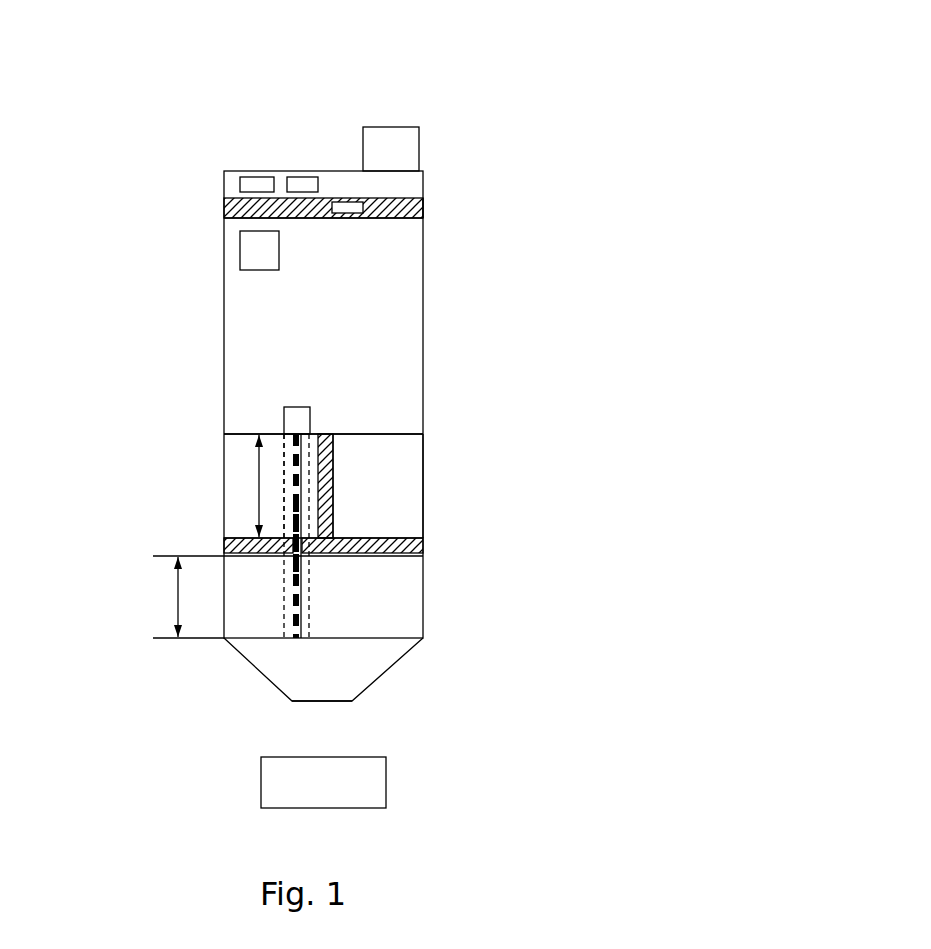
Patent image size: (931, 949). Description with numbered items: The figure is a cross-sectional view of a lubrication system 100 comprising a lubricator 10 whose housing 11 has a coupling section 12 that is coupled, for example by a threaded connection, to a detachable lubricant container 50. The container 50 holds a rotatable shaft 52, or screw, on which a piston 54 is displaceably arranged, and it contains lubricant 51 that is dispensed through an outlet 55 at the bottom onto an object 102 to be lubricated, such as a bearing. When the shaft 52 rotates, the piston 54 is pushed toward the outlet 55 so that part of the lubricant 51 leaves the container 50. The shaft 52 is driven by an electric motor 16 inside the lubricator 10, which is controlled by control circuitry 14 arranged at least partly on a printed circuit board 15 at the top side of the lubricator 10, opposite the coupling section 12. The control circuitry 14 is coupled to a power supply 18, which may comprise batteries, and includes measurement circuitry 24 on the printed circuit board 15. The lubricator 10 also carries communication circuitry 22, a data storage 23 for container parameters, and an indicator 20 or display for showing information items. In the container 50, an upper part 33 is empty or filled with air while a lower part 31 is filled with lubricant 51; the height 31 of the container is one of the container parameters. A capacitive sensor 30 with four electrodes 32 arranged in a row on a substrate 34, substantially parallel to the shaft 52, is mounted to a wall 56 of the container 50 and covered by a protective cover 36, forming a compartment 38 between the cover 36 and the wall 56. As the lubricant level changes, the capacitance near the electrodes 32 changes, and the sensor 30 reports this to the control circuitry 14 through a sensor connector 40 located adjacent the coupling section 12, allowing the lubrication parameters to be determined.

The lubrication system 100 is at (495, 72).
The lubricator 10 is at (168, 120).
The housing 11 is at (423, 338).
The coupling section 12 is at (222, 418).
The control circuitry 14 is at (224, 207).
The printed circuit board 15 is at (423, 205).
The electric motor 16 is at (395, 285).
The power supply 18 is at (240, 248).
The indicator 20 is at (383, 127).
The communication circuitry 22 is at (268, 170).
The data storage 23 is at (313, 170).
The measurement circuitry 24 is at (347, 198).
The capacitive sensor 30 is at (278, 488).
The lower part 31 is at (172, 600).
The electrodes 32 is at (293, 573).
The upper part 33 is at (252, 465).
The substrate 34 is at (307, 432).
The protective cover 36 is at (312, 462).
The compartment 38 is at (288, 473).
The sensor connector 40 is at (275, 413).
The lubricant container 50 is at (432, 615).
The lubricant 51 is at (398, 586).
The rotatable shaft 52 is at (335, 512).
The piston 54 is at (423, 548).
The outlet 55 is at (334, 701).
The wall 56 is at (423, 472).
The object 102 is at (386, 788).